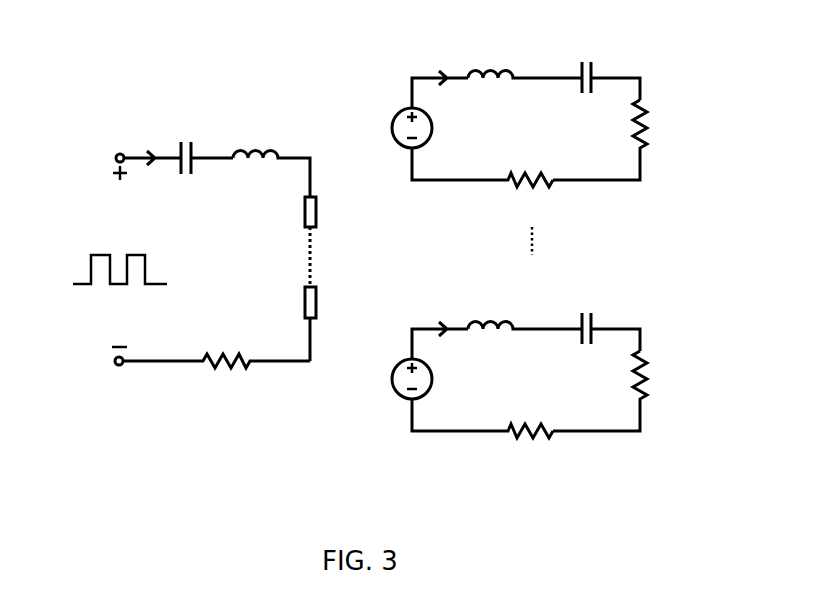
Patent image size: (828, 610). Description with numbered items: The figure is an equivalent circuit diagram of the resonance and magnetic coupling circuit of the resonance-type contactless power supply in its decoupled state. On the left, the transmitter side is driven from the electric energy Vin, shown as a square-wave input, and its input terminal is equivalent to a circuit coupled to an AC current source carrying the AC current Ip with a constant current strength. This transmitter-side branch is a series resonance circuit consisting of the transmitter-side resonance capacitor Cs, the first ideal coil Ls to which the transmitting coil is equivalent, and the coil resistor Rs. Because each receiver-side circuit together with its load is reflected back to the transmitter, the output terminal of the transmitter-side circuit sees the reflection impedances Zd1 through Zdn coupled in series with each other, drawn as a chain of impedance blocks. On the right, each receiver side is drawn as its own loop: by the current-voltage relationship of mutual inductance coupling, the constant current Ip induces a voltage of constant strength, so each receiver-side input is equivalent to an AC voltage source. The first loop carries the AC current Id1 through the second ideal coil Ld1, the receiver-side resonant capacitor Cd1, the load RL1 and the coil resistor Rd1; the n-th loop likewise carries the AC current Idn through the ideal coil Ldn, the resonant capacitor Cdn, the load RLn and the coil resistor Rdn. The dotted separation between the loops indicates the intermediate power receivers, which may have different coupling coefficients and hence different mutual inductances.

The AC current Ip is at (147, 150).
The transmitter-side resonance capacitor Cs is at (202, 147).
The first ideal coil Ls is at (271, 158).
The reflection impedance Zd1 is at (329, 242).
The reflection impedance Zdn is at (329, 324).
The coil resistor Rs is at (211, 348).
The DC current Vin is at (105, 269).
The AC current Id1 is at (440, 72).
The second ideal coil Ld1 is at (525, 57).
The receiver-side resonant capacitor Cd1 is at (607, 68).
The load RL1 is at (624, 140).
The coil resistor Rd1 is at (505, 167).
The AC current Idn is at (440, 323).
The second ideal coil Ldn is at (525, 308).
The receiver-side resonant capacitor Cdn is at (606, 319).
The load RLn is at (624, 391).
The coil resistor Rdn is at (505, 418).